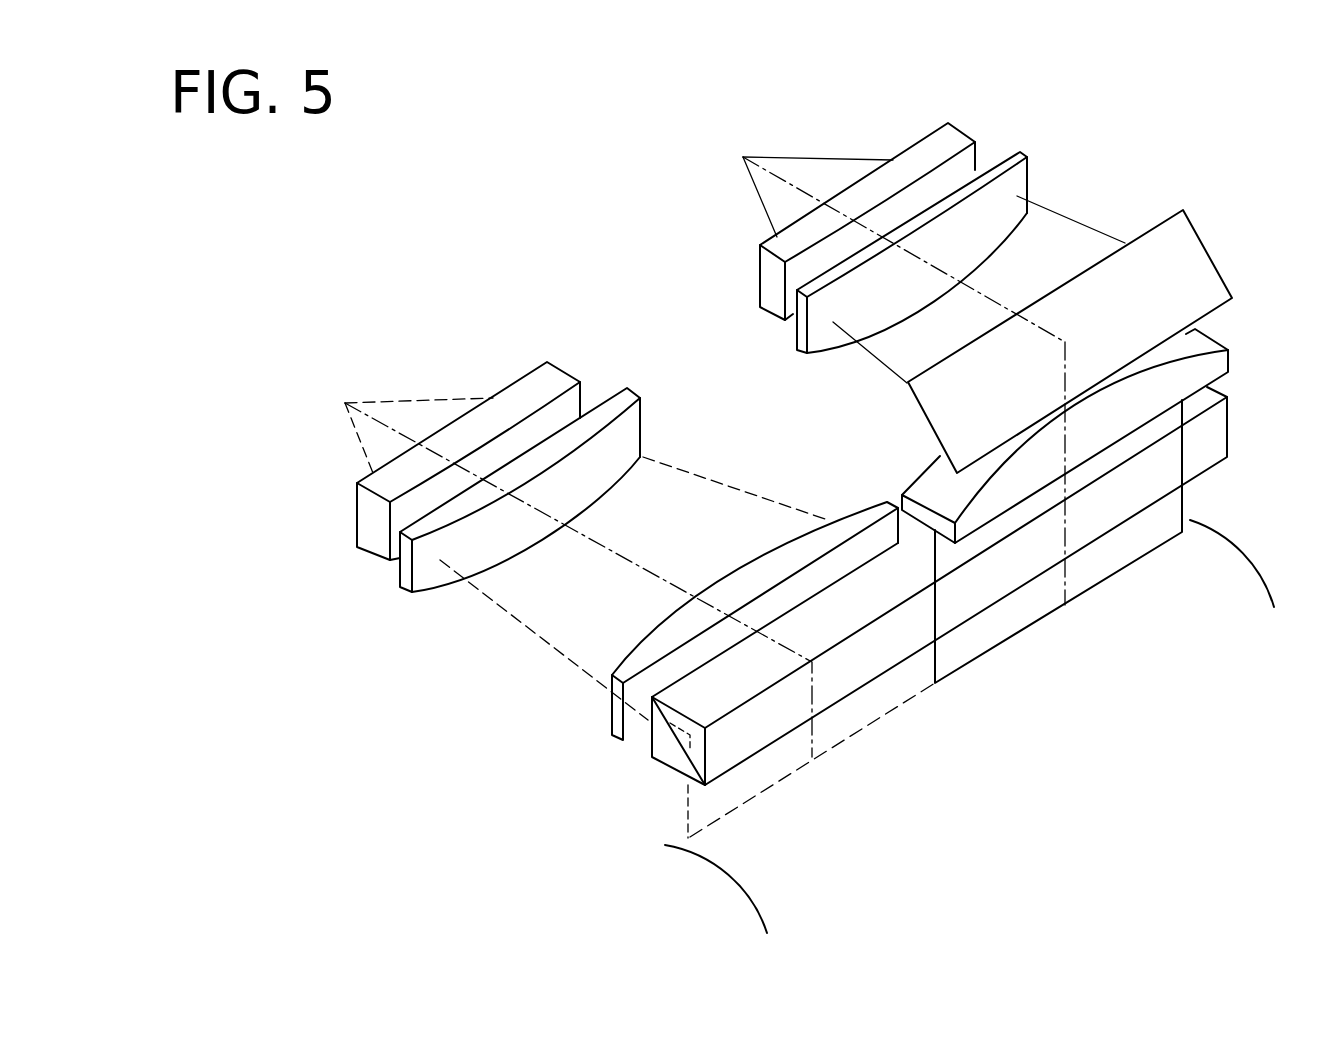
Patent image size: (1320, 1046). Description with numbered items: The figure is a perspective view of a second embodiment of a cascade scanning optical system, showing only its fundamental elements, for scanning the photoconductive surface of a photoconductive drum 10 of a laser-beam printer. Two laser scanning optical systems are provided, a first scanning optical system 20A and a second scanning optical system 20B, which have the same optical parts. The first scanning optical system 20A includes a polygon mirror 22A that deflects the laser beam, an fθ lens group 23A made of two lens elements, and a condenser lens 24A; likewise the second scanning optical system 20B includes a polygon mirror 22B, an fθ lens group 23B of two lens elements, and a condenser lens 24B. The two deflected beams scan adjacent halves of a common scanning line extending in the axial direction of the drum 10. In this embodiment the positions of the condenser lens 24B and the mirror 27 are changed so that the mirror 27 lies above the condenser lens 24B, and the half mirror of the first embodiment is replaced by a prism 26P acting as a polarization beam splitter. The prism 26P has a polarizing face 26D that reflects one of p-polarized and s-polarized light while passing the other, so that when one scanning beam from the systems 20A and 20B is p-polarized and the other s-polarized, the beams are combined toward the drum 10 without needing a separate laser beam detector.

The photoconductive drum 10 is at (733, 862).
The first scanning optical system 20A is at (336, 447).
The second scanning optical system 20B is at (700, 175).
The polygon mirror 22A is at (344, 401).
The polygon mirror 22B is at (743, 157).
The fθ lens group 23A is at (568, 347).
The fθ lens group 23B is at (1047, 148).
The condenser lens 24A is at (832, 524).
The condenser lens 24B is at (1197, 330).
The polarizing face 26D is at (683, 727).
The prism 26P is at (1220, 423).
The mirror 27 is at (1213, 281).